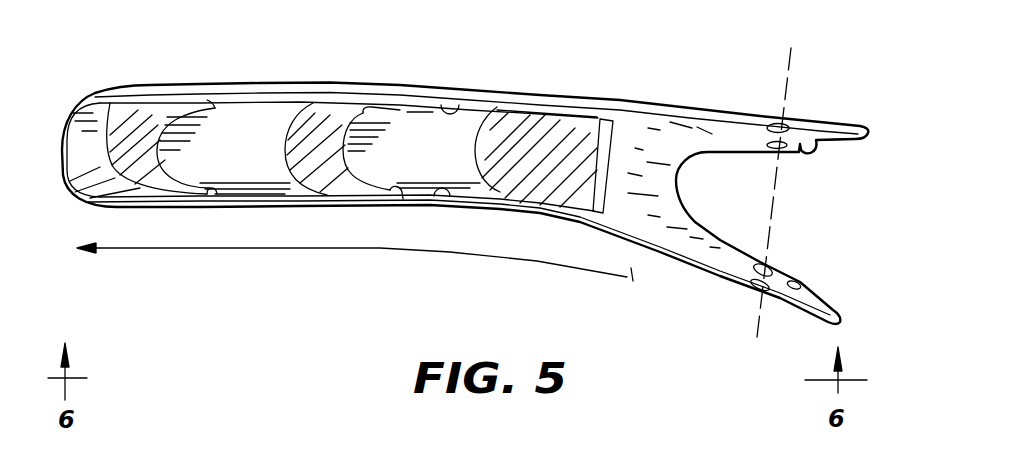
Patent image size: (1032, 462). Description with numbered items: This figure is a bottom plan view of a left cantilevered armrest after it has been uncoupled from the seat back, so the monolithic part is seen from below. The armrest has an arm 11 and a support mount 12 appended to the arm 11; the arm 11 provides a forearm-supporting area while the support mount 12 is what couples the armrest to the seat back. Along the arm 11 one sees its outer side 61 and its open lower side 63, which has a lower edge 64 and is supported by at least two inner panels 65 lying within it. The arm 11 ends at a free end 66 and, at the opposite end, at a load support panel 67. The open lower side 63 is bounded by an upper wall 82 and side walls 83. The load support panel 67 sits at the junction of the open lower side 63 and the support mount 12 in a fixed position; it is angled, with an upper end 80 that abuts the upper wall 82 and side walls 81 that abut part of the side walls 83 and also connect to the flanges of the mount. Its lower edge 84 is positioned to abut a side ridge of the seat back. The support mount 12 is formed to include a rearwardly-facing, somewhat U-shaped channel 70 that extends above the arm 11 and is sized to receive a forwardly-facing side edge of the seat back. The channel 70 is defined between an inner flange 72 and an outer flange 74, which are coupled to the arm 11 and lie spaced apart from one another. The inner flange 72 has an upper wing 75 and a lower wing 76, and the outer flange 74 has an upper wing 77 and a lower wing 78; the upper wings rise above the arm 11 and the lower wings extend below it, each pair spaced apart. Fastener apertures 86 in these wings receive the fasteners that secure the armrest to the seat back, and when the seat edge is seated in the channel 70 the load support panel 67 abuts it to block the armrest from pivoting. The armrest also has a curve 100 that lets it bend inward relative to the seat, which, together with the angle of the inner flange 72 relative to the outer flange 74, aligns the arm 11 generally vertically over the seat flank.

The arm 11 is at (296, 83).
The support mount 12 is at (678, 153).
The outer side 61 is at (238, 91).
The open lower side 63 is at (243, 155).
The lower edge 64 is at (493, 100).
The inner panels 65 is at (153, 107).
The free end 66 is at (67, 149).
The load support panel 67 is at (568, 163).
The U-shaped channel 70 is at (670, 187).
The inner flange 72 is at (747, 300).
The outer flange 74 is at (813, 113).
The upper wing 75 is at (799, 283).
The lower wing 76 is at (831, 312).
The upper wing 77 is at (801, 154).
The lower wing 78 is at (858, 122).
The upper end 80 is at (478, 153).
The side walls 81 is at (543, 113).
The upper wall 82 is at (408, 150).
The side walls 83 is at (458, 95).
The lower edge 84 is at (613, 150).
The fastener apertures 86 is at (763, 143).
The curve 100 is at (337, 249).